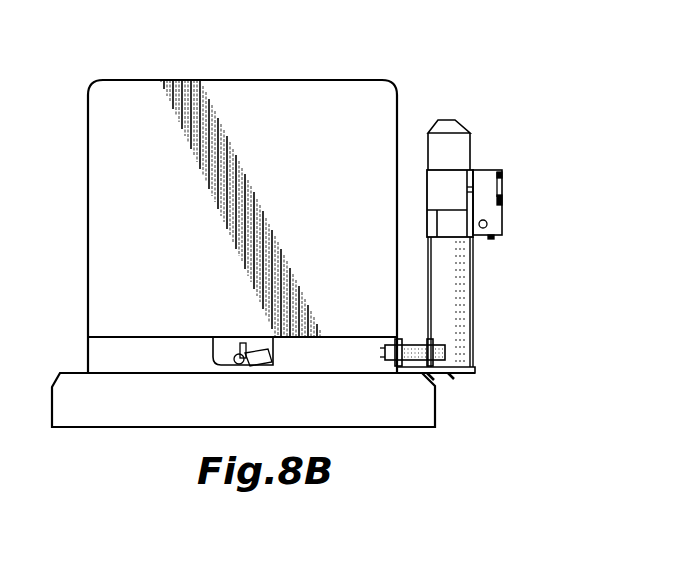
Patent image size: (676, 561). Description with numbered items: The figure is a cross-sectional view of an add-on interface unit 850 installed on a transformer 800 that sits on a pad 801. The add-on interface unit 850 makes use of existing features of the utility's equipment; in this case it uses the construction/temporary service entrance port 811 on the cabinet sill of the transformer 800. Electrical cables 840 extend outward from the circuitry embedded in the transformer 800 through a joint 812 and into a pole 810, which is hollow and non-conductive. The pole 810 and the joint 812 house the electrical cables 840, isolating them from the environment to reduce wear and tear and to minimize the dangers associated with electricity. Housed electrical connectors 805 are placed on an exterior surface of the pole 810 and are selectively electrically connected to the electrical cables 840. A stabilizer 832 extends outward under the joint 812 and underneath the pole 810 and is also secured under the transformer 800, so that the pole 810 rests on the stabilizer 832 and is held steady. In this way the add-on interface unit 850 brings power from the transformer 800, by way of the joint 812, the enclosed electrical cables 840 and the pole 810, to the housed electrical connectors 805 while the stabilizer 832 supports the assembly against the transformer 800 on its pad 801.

The transformer 800 is at (254, 80).
The pad 801 is at (115, 428).
The housed electrical connectors 805 is at (445, 173).
The pole 810 is at (453, 120).
The construction/temporary service entrance port 811 is at (387, 348).
The joint 812 is at (413, 343).
The stabilizer 832 is at (450, 376).
The electrical cables 840 is at (472, 268).
The add-on interface unit 850 is at (540, 298).